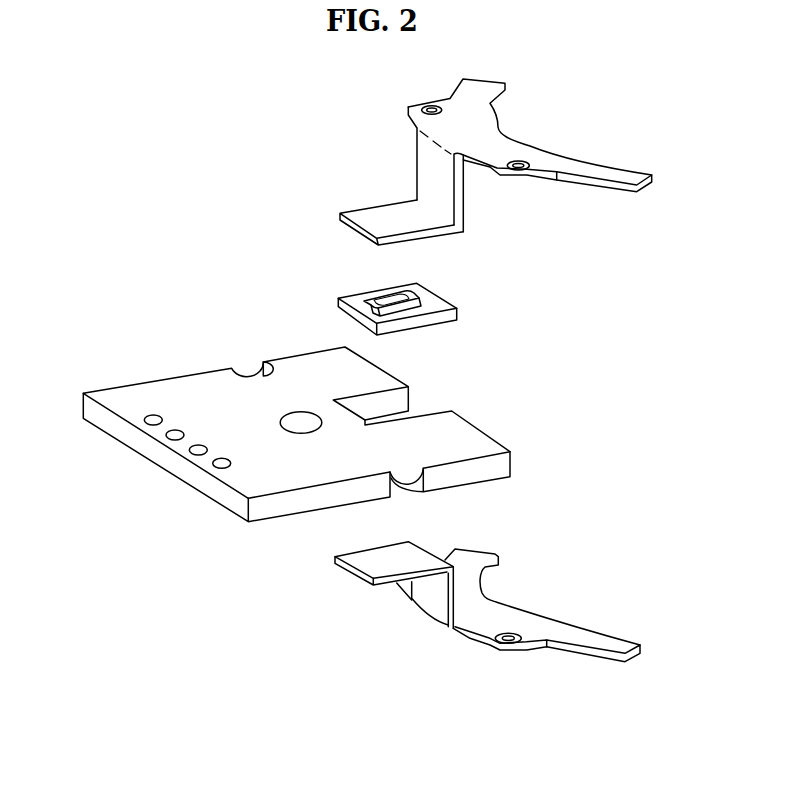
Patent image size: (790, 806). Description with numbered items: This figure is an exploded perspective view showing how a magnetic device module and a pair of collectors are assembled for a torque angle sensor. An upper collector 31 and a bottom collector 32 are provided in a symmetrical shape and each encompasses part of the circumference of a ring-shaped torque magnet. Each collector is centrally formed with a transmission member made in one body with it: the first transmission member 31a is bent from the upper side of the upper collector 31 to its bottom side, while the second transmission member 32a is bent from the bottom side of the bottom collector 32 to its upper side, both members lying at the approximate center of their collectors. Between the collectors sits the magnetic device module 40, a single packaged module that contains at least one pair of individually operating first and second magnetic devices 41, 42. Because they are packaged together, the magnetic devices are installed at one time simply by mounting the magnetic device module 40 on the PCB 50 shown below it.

The upper collector 31 is at (497, 141).
The first transmission member 31a is at (386, 214).
The bottom collector 32 is at (505, 614).
The second transmission member 32a is at (373, 569).
The magnetic device module 40 is at (463, 297).
The first magnetic device 41 is at (443, 297).
The second magnetic device 42 is at (457, 315).
The PCB 50 is at (185, 393).